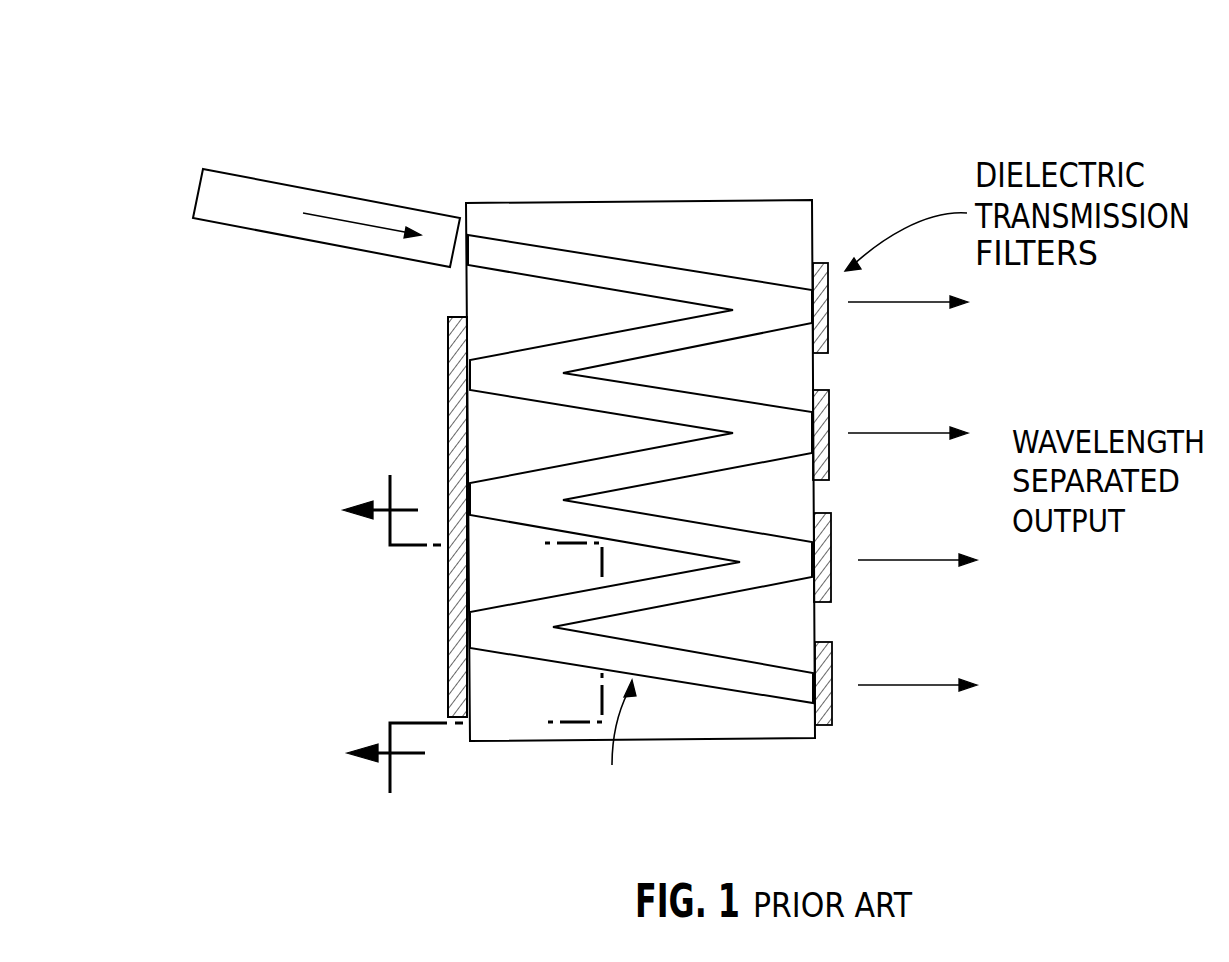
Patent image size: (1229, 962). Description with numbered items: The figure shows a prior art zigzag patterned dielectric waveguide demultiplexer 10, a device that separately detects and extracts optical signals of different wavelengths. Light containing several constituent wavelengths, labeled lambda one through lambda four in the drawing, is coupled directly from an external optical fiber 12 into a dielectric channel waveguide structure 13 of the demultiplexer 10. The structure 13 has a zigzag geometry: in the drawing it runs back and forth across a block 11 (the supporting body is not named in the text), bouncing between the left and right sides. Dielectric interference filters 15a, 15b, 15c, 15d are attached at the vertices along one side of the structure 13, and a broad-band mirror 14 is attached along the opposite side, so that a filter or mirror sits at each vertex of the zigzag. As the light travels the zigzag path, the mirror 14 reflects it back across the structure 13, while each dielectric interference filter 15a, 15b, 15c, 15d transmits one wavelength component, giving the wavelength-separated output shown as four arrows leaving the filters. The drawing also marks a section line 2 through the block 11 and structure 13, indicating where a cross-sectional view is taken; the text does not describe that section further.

The zigzag patterned dielectric waveguide demultiplexer 10 is at (1020, 88).
The block 11 is at (705, 201).
The external optical fiber 12 is at (214, 222).
The dielectric channel waveguide structure 13 is at (612, 258).
The mirror 14 is at (448, 347).
The dielectric interference filter 15a is at (830, 340).
The dielectric interference filter 15b is at (830, 467).
The dielectric interference filter 15c is at (832, 590).
The dielectric interference filter 15d is at (833, 717).
The section line 2- 2 is at (472, 632).